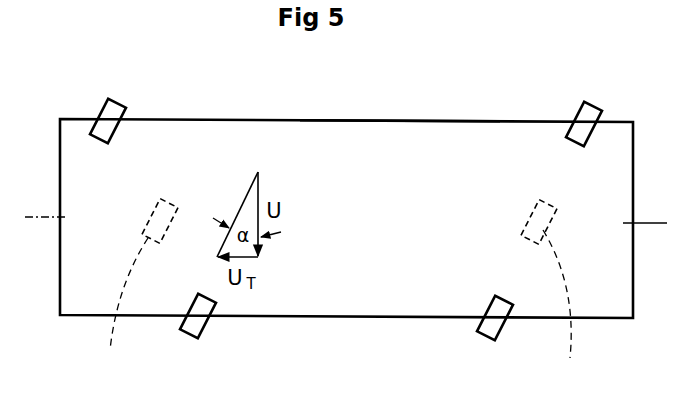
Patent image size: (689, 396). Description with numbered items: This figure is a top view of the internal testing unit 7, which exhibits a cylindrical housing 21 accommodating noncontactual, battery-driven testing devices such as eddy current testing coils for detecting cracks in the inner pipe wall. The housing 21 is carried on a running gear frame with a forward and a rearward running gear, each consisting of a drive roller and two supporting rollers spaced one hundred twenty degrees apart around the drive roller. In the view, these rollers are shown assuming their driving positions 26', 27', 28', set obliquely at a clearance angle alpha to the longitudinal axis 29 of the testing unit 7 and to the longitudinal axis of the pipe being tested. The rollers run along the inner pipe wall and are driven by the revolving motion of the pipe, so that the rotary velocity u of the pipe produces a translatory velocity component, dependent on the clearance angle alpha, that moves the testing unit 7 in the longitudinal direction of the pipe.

The internal testing unit 7 is at (344, 115).
The cylindrical housing 21 is at (448, 128).
The driving position of supporting roller 28' is at (344, 94).
The driving position of supporting roller 27' is at (361, 337).
The driving position of drive roller 26' is at (345, 289).
The longitudinal axis of the testing unit 29 is at (346, 210).